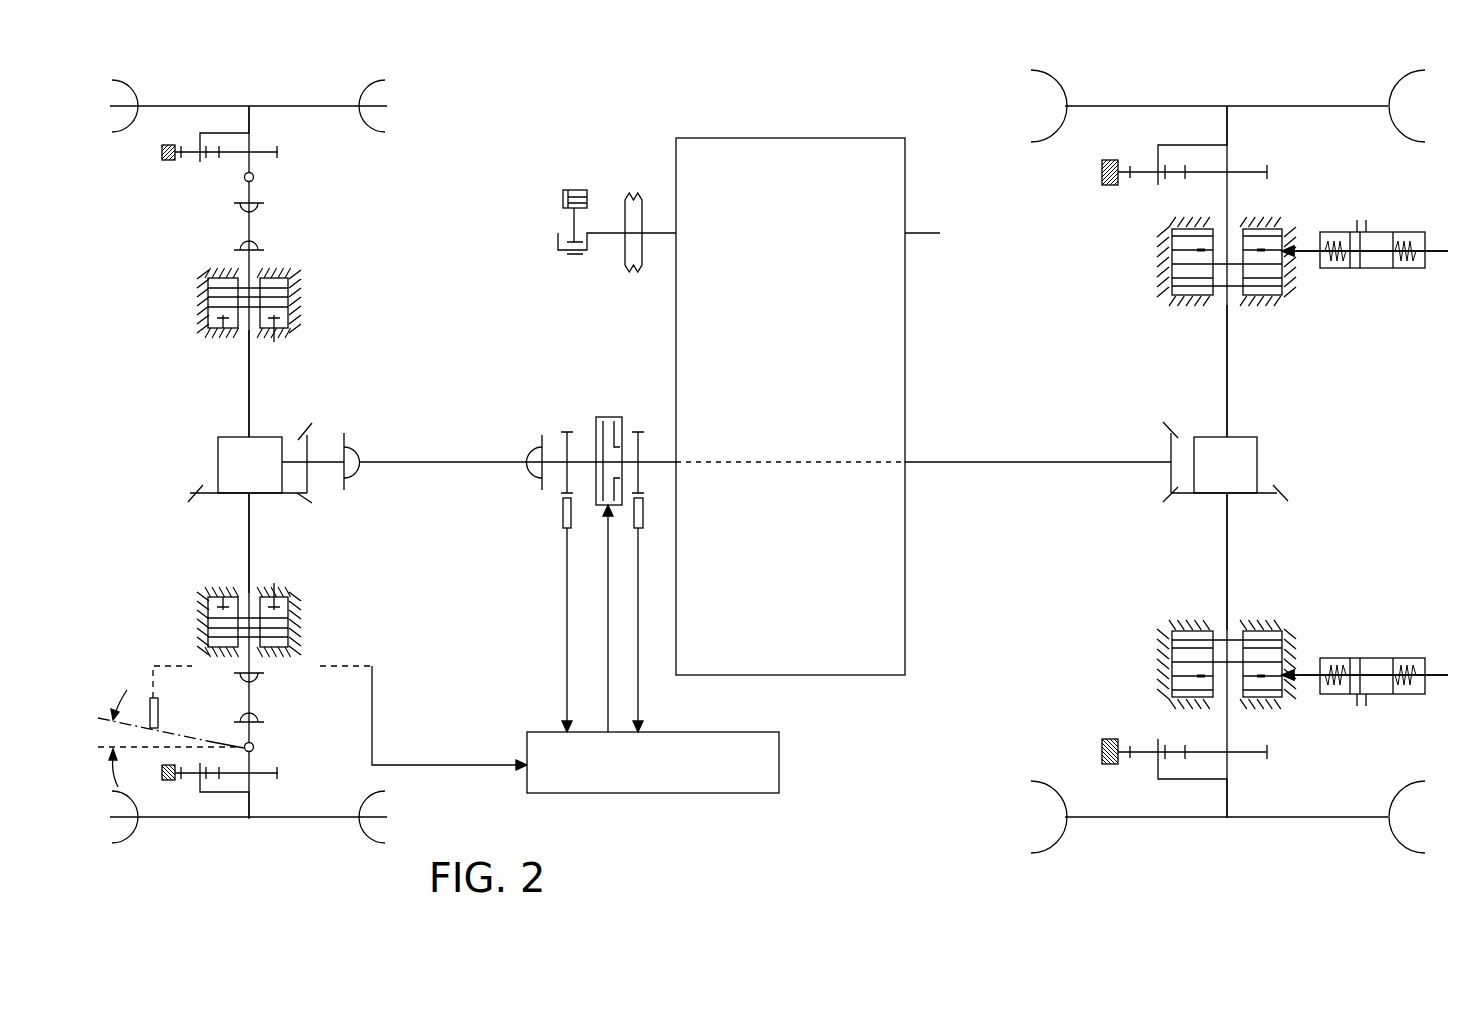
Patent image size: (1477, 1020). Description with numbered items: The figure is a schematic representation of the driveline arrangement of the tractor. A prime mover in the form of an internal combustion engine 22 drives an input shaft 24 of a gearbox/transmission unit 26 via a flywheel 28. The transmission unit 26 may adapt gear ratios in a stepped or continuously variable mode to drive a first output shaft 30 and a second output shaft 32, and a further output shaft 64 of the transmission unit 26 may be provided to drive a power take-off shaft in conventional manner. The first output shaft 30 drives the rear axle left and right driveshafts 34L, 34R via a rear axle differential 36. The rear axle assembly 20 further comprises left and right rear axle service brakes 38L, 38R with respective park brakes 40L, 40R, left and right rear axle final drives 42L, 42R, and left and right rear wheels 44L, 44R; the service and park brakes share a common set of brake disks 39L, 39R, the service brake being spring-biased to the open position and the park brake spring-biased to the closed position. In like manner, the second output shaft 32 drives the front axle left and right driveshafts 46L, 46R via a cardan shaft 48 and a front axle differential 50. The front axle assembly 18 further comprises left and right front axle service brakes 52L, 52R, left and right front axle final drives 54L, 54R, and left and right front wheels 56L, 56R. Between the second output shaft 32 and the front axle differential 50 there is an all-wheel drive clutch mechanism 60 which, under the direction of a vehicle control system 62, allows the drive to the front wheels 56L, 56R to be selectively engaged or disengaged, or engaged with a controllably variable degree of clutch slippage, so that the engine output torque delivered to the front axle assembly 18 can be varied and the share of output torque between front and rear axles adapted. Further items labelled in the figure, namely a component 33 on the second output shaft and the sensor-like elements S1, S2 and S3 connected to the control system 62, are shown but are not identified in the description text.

The front axle assembly 18 is at (198, 381).
The rear axle assembly 20 is at (1382, 421).
The internal combustion engine 22 is at (570, 190).
The input shaft 24 is at (592, 240).
The gearbox/transmission unit 26 is at (731, 168).
The flywheel 28 is at (636, 210).
The first output shaft 30 is at (997, 465).
The second output shaft 32 is at (645, 460).
The gear 33 is at (578, 460).
The right rear axle driveshaft 34R is at (1226, 333).
The left rear axle driveshaft 34L is at (1226, 545).
The rear axle differential 36 is at (1250, 452).
The right rear axle service brake 38R is at (1340, 266).
The left rear axle service brake 38L is at (1335, 686).
The right brake disks 39R is at (1165, 274).
The left brake disks 39L is at (1160, 662).
The right park brake 40R is at (1418, 266).
The left park brake 40L is at (1418, 686).
The right rear axle final drive 42R is at (1267, 172).
The left rear axle final drive 42L is at (1267, 752).
The right rear wheel 44R is at (1190, 106).
The left rear wheel 44L is at (1248, 818).
The right front axle driveshaft 46R is at (250, 375).
The left front axle driveshaft 46L is at (248, 541).
The cardan shaft 48 is at (404, 463).
The front axle differential 50 is at (235, 478).
The right front axle service brake 52R is at (208, 294).
The left front axle service brake 52L is at (290, 617).
The right front axle final drive 54R is at (268, 152).
The left front axle final drive 54L is at (278, 773).
The right front wheel 56R is at (237, 104).
The left front wheel 56L is at (229, 818).
The all-wheel drive clutch mechanism 60 is at (605, 428).
The vehicle control system 62 is at (690, 778).
The further output shaft 64 is at (925, 232).
The speed sensor S1 is at (640, 522).
The speed sensor S2 is at (562, 518).
The steering angle sensor S3 is at (150, 700).